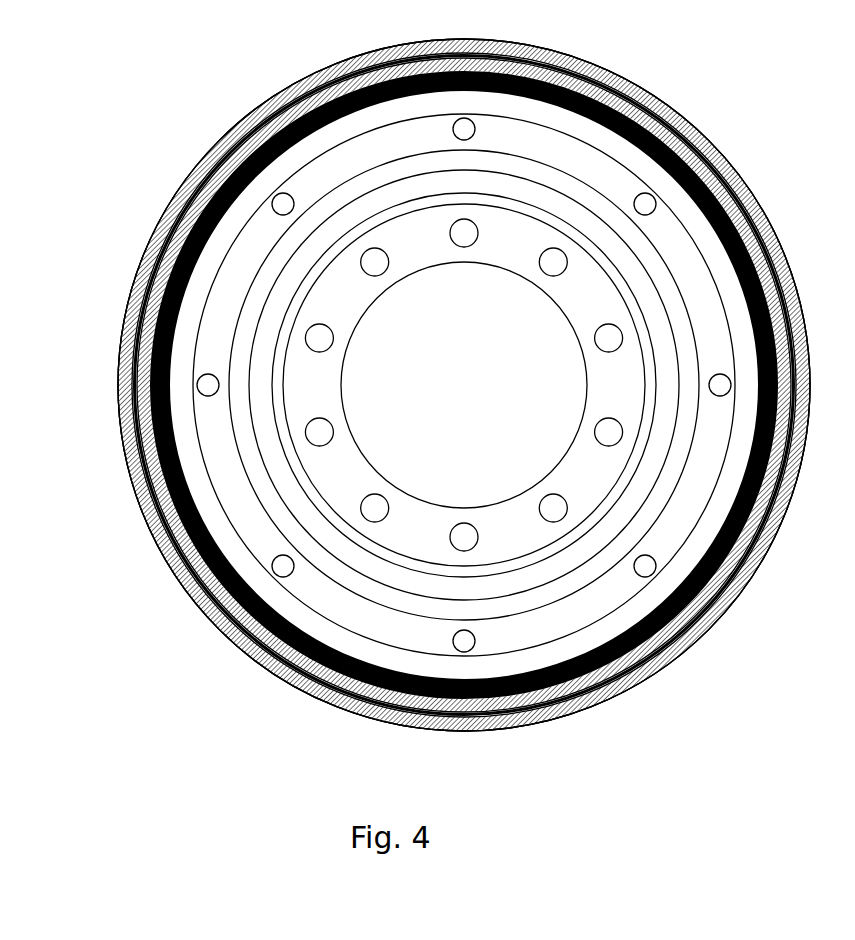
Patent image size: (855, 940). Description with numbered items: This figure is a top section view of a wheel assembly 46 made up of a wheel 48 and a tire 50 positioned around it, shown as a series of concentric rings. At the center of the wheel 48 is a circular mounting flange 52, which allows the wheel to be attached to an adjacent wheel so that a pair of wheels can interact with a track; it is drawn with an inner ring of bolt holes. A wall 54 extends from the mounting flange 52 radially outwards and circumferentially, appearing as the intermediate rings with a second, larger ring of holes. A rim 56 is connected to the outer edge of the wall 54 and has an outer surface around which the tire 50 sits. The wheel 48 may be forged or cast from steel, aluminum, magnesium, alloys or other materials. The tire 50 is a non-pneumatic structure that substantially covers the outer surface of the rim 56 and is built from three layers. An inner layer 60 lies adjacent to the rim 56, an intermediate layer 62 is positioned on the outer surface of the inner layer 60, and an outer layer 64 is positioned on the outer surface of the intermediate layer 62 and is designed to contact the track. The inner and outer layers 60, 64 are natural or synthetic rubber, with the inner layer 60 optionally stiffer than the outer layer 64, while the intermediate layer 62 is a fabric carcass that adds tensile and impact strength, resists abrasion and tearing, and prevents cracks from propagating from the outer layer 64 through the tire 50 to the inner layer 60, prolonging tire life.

The wheel assembly 46 is at (70, 77).
The wheel 48 is at (240, 498).
The tire 50 is at (277, 93).
The circular mounting flange 52 is at (345, 478).
The wall 54 is at (362, 583).
The rim 56 is at (160, 375).
The inner layer 60 is at (580, 683).
The intermediate layer 62 is at (637, 103).
The outer layer 64 is at (618, 685).